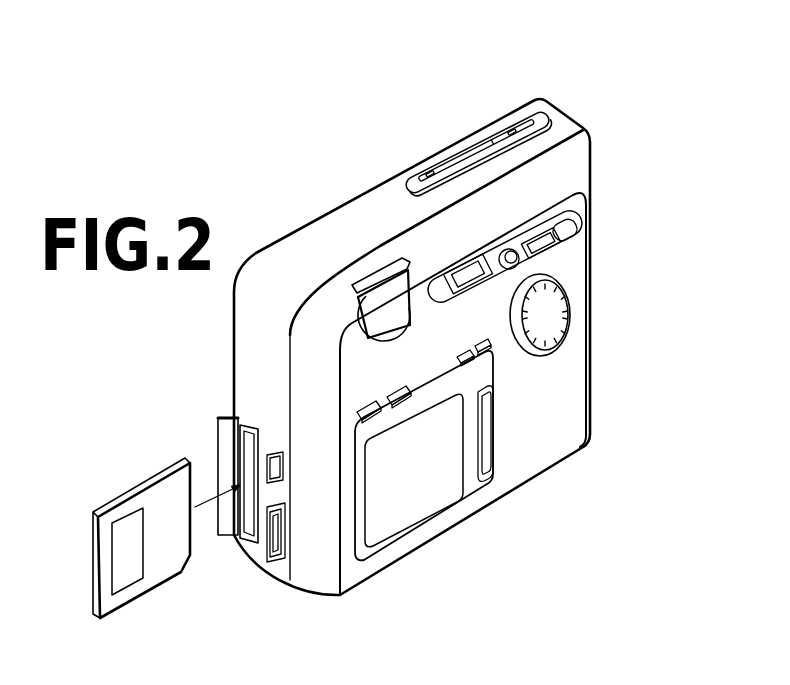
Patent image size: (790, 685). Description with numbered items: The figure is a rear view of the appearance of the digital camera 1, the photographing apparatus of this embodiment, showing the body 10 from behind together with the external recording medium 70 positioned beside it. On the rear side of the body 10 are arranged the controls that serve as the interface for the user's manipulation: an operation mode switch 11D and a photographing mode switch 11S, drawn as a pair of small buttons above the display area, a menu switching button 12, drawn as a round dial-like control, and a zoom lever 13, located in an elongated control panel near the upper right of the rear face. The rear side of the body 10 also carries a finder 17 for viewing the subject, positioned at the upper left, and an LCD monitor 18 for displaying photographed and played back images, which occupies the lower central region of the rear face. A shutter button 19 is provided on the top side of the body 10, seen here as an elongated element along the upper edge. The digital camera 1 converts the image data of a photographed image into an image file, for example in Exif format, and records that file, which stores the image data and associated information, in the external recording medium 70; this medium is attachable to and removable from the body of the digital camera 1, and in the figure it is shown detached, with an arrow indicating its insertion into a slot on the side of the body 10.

The digital camera 1 is at (337, 88).
The body 10 is at (560, 106).
The shutter button 19 is at (524, 119).
The finder 17 is at (388, 302).
The zoom lever 13 is at (549, 232).
The menu switching button 12 is at (548, 312).
The LCD monitor 18 is at (423, 487).
The photographing mode switch 11S is at (380, 410).
The operation mode switch 11D is at (410, 396).
The external recording medium 70 is at (147, 477).